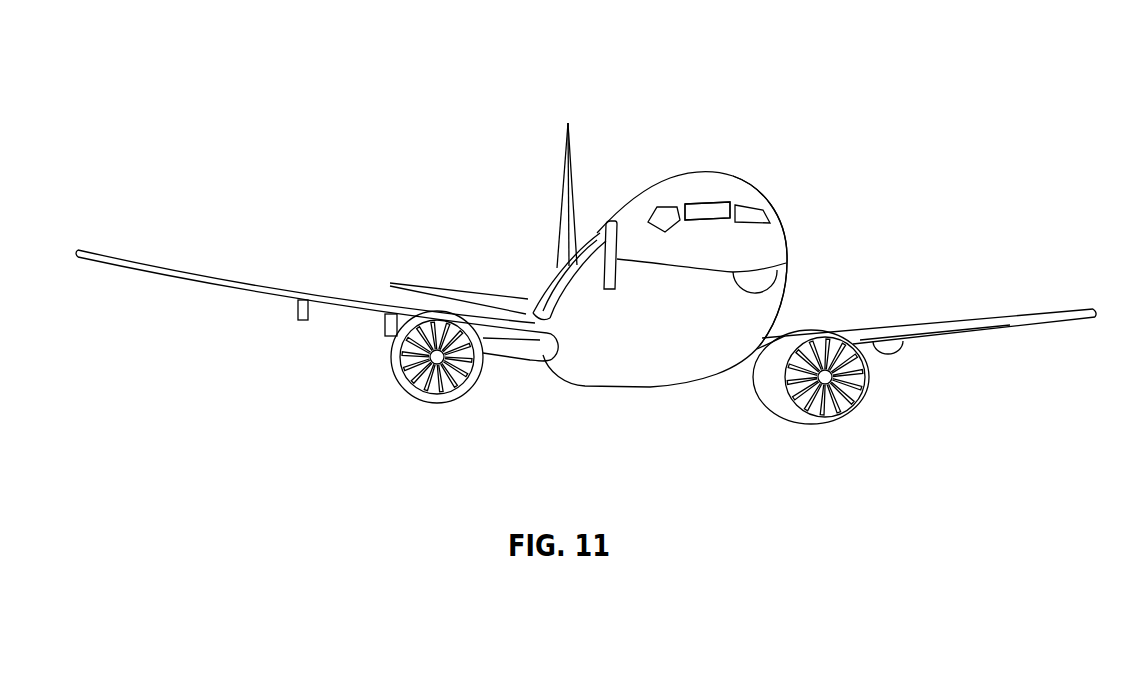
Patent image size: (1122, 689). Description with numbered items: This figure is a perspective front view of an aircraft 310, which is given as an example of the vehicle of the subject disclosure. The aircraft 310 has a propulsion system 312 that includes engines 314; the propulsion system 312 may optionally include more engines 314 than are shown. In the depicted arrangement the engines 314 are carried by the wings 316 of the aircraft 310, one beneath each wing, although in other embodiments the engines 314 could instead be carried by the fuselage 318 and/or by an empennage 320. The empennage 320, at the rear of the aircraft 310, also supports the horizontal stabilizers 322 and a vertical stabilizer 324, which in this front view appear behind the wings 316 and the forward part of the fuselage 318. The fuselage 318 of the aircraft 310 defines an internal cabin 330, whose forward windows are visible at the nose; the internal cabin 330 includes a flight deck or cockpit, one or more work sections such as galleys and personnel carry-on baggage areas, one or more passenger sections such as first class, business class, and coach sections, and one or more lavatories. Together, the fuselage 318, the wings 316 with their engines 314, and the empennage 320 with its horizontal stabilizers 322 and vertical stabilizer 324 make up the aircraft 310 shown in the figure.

The aircraft 310 is at (331, 69).
The propulsion system 312 is at (356, 414).
The engines 314 is at (436, 403).
The wings 316 is at (215, 279).
The fuselage 318 is at (787, 233).
The empennage 320 is at (555, 263).
The horizontal stabilizers 322 is at (427, 286).
The vertical stabilizer 324 is at (567, 162).
The internal cabin 330 is at (710, 206).